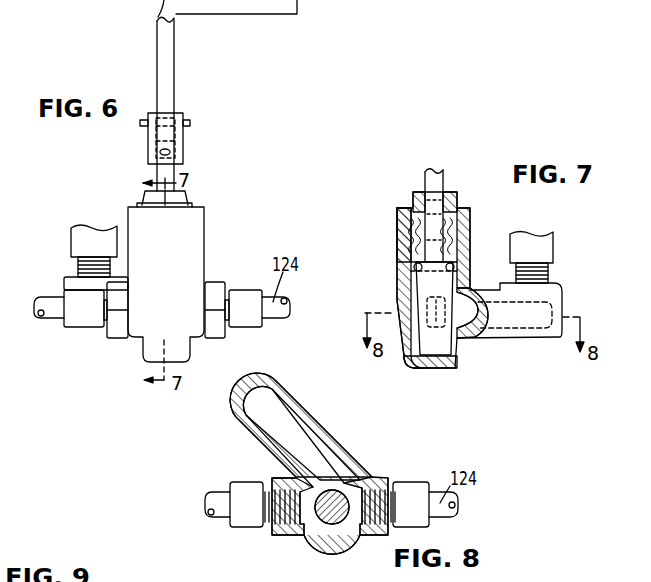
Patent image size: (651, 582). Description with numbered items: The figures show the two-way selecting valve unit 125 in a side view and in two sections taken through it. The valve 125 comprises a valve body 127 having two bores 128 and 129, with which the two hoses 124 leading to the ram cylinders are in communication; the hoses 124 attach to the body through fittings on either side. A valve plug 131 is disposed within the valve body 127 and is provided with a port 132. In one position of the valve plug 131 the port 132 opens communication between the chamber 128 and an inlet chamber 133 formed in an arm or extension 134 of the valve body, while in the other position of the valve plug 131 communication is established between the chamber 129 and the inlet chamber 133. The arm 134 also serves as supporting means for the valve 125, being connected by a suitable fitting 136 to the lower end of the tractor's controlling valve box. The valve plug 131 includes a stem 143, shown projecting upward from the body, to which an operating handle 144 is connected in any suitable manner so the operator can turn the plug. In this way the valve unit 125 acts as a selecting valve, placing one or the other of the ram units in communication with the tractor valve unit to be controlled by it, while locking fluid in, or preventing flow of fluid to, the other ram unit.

In FIG. 6, the hose 124 is at (55, 303).
In FIG. 8, the hose 124 is at (217, 498).
In FIG. 6, the two-way valve unit 125 is at (218, 207).
In FIG. 7, the two-way valve unit 125 is at (478, 237).
In FIG. 6, the valve body 127 is at (152, 317).
In FIG. 7, the bore 128 is at (430, 307).
In FIG. 8, the bore 128 is at (308, 511).
In FIG. 8, the bore 129 is at (353, 512).
In FIG. 7, the valve plug 131 is at (428, 337).
In FIG. 8, the port 132 is at (336, 527).
In FIG. 7, the inlet chamber 133 is at (471, 318).
In FIG. 8, the inlet chamber 133 is at (284, 428).
In FIG. 7, the arm 134 is at (503, 343).
In FIG. 8, the arm 134 is at (288, 384).
In FIG. 6, the fitting 136 is at (78, 229).
In FIG. 7, the fitting 136 is at (540, 247).
In FIG. 6, the stem 143 is at (160, 176).
In FIG. 7, the stem 143 is at (436, 183).
In FIG. 6, the operating handle 144 is at (170, 67).